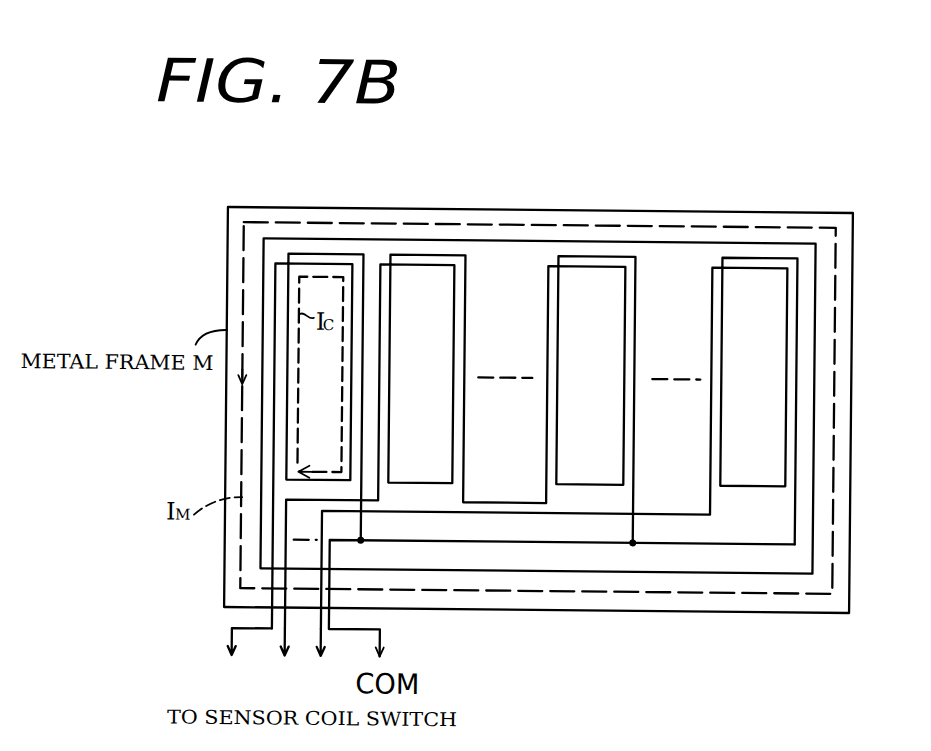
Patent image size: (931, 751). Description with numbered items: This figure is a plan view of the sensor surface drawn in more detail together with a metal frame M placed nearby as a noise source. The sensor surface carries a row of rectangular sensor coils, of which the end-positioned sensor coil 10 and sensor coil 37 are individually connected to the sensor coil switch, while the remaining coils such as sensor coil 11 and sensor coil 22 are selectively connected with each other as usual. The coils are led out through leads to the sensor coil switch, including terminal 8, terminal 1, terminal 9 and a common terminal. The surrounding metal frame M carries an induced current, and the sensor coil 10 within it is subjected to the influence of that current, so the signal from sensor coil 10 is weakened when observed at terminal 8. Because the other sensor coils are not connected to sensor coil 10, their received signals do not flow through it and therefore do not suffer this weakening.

The sensor coil 10 is at (323, 256).
The sensor coil 11 is at (422, 256).
The sensor coil 22 is at (592, 256).
The sensor coil 37 is at (752, 256).
The terminal 8 is at (246, 663).
The sensor coil switch terminal 1 is at (280, 663).
The sensor coil switch terminal 9 is at (319, 664).